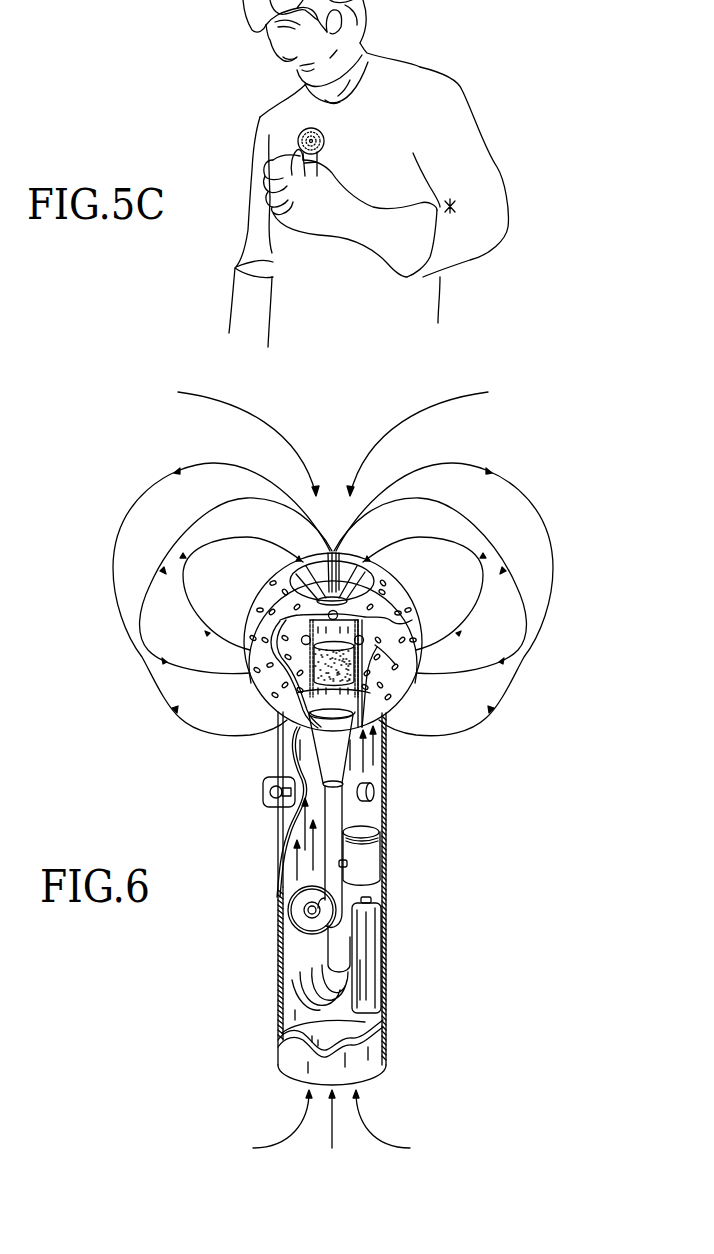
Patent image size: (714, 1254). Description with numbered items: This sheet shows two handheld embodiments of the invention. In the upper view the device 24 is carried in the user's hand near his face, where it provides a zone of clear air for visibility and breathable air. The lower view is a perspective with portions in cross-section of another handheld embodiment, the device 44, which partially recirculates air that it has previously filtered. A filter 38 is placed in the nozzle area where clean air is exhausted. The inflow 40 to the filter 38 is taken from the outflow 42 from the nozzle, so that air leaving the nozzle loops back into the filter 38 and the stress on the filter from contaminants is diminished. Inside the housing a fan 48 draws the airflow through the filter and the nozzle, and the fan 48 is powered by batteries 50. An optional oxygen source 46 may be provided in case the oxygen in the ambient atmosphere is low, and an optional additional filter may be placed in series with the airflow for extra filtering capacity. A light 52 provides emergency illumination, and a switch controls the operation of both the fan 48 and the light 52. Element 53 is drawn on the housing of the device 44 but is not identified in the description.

In FIG. 5C, the device 24 is at (279, 133).
In FIG. 6, the filter 38 is at (357, 663).
In FIG. 6, the inflow 40 is at (377, 437).
In FIG. 6, the outflow 42 is at (137, 680).
In FIG. 6, the device 44 is at (505, 874).
In FIG. 6, the oxygen source 46 is at (382, 848).
In FIG. 6, the fan 48 is at (288, 915).
In FIG. 6, the batteries 50 is at (380, 982).
In FIG. 6, the light 52 is at (262, 797).
In FIG. 6, the button 53 is at (390, 792).